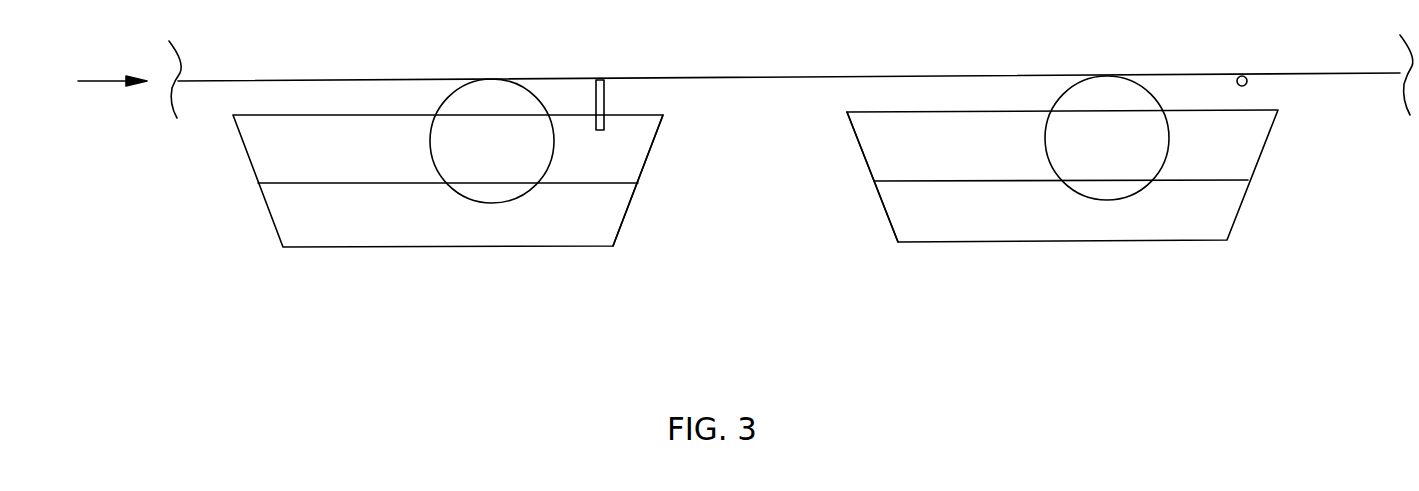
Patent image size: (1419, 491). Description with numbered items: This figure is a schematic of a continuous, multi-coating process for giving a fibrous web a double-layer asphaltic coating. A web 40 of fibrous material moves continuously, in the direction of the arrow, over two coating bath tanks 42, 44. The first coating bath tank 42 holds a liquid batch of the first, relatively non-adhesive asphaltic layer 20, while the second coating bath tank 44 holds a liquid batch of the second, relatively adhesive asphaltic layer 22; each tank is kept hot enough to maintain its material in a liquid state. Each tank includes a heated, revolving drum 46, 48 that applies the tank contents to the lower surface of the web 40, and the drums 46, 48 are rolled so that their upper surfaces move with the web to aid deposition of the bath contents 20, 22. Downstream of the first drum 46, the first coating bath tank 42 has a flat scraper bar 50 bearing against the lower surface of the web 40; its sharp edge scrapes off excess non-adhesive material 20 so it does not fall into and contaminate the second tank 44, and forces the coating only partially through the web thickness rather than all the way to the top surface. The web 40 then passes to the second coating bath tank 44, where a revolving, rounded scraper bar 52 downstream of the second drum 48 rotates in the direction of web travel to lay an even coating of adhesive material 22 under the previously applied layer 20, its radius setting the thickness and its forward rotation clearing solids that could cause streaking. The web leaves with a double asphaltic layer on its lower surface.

The relatively non-adhesive asphaltic layer 20 is at (528, 232).
The relatively adhesive asphaltic layer 22 is at (979, 224).
The web 40 is at (1336, 75).
The first coating bath tank 42 is at (657, 135).
The second coating bath tank 44 is at (862, 157).
The heated revolving drum 46 is at (488, 92).
The heated revolving drum 48 is at (1105, 92).
The flat scraper bar 50 is at (600, 80).
The rounded scraper bar 52 is at (1240, 76).